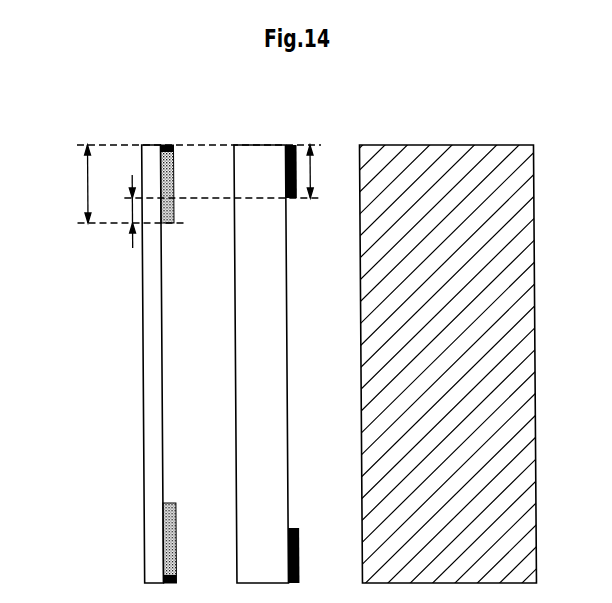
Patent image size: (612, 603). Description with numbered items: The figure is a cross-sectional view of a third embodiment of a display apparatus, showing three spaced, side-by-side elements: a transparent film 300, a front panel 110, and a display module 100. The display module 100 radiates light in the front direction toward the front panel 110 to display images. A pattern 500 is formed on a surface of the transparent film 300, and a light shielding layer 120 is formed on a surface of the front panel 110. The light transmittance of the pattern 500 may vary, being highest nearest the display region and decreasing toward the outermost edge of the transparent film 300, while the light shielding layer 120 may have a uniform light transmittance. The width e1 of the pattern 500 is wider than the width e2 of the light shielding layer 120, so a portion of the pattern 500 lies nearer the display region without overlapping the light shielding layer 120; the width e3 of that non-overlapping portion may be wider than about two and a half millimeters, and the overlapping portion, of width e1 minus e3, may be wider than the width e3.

The display module 100 is at (447, 152).
The front panel 110 is at (256, 146).
The light shielding layer 120 is at (290, 200).
The transparent film 300 is at (148, 148).
The pattern 500 is at (175, 162).
The width of pattern e1 is at (75, 184).
The width of light shielding layer e2 is at (322, 171).
The width of non-overlapping portion of pattern e3 is at (119, 211).